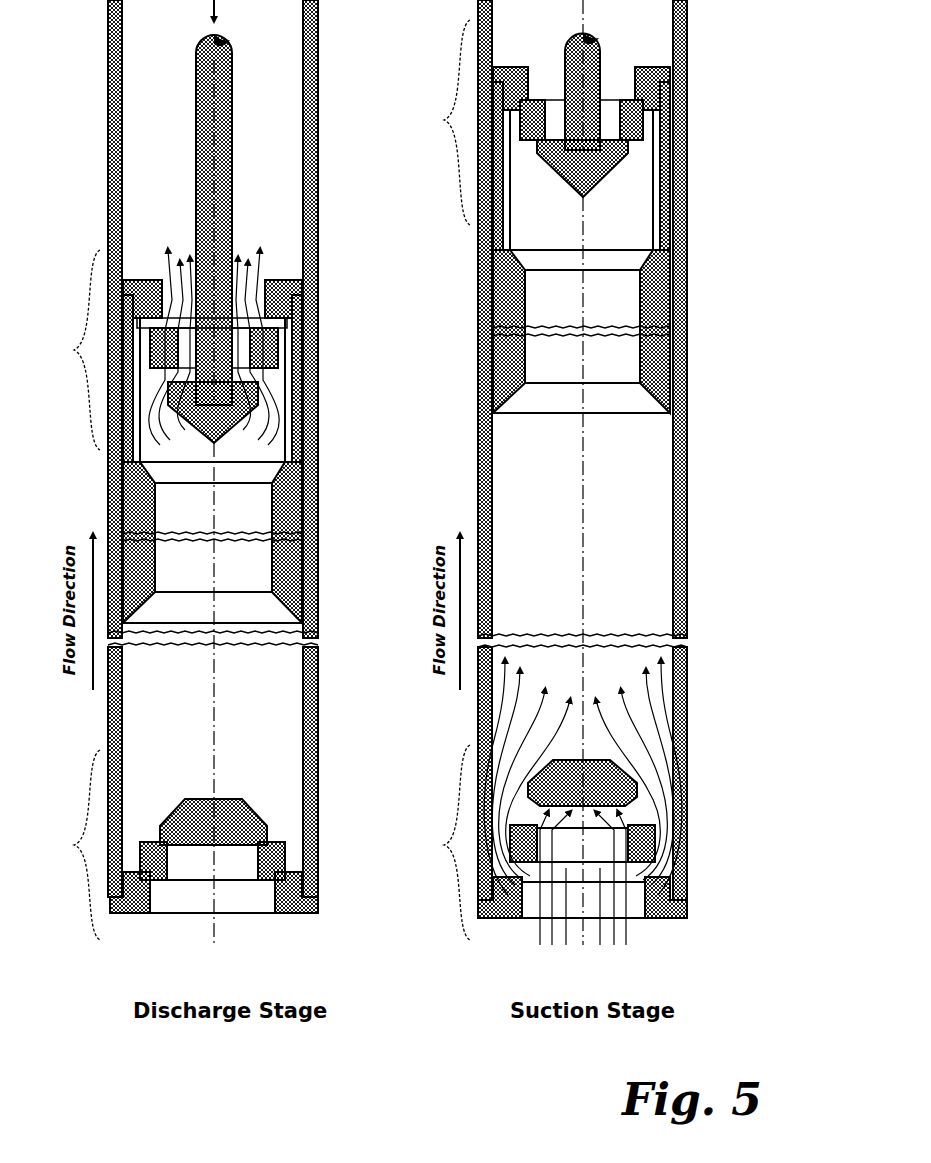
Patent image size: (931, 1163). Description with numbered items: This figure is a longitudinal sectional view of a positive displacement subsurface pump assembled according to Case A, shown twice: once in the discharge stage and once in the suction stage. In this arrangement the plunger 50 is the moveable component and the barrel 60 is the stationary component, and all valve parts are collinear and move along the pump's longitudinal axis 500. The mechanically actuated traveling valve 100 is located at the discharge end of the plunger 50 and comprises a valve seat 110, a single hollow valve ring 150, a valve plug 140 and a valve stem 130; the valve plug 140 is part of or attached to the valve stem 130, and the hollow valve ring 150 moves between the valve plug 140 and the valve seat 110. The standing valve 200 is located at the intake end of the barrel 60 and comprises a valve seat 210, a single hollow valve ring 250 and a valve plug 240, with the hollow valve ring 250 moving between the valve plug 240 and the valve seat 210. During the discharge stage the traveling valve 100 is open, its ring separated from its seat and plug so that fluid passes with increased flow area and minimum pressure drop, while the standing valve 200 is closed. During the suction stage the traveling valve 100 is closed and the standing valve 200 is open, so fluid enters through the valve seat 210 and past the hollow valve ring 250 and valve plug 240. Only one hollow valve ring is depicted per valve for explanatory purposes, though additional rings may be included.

The plunger 50 is at (290, 494).
The barrel 60 is at (312, 203).
The mechanically actuated traveling valve 100 is at (238, 278).
The valve seat 110 is at (285, 287).
The valve stem 130 is at (232, 131).
The valve plug 140 is at (240, 396).
The hollow valve ring 150 is at (262, 350).
The standing valve 200 is at (238, 856).
The valve seat 210 is at (318, 907).
The valve plug 240 is at (238, 833).
The hollow valve ring 250 is at (283, 860).
The longitudinal axis 500 is at (214, 520).